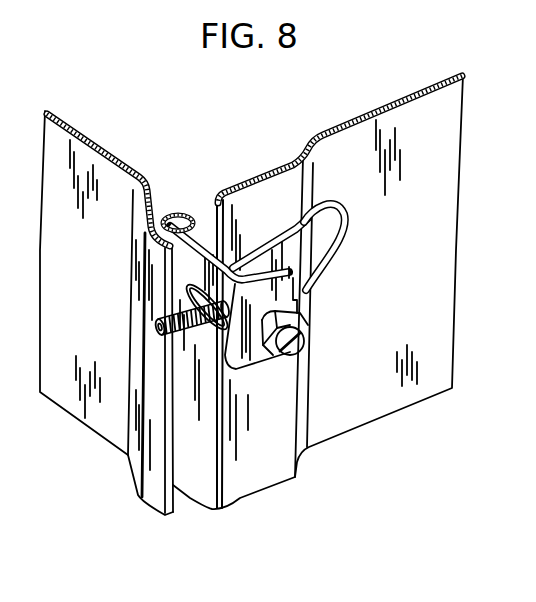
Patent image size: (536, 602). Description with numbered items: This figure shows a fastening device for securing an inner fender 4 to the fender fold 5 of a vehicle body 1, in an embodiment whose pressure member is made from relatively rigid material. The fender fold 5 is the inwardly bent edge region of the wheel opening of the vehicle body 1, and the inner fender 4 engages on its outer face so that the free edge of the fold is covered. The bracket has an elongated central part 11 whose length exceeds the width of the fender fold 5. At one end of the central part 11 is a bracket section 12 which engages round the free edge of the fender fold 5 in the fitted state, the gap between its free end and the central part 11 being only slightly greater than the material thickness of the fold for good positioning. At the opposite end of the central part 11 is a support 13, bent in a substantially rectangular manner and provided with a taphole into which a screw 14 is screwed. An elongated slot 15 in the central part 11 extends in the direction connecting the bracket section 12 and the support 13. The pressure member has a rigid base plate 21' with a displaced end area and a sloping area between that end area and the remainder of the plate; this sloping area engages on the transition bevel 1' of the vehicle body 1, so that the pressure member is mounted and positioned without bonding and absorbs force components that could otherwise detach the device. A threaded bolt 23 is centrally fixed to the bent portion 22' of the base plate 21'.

The vehicle body 1 is at (318, 292).
The transition bevel 1' is at (340, 139).
The inner fender 4 is at (65, 386).
The fender fold 5 is at (197, 229).
The central part 11 is at (217, 365).
The bracket section 12 is at (170, 216).
The support 13 is at (257, 358).
The screw 14 is at (303, 350).
The elongated slot 15 is at (188, 299).
The base plate 21' is at (329, 252).
The bent portion 22' is at (258, 177).
The threaded bolt 23 is at (157, 330).